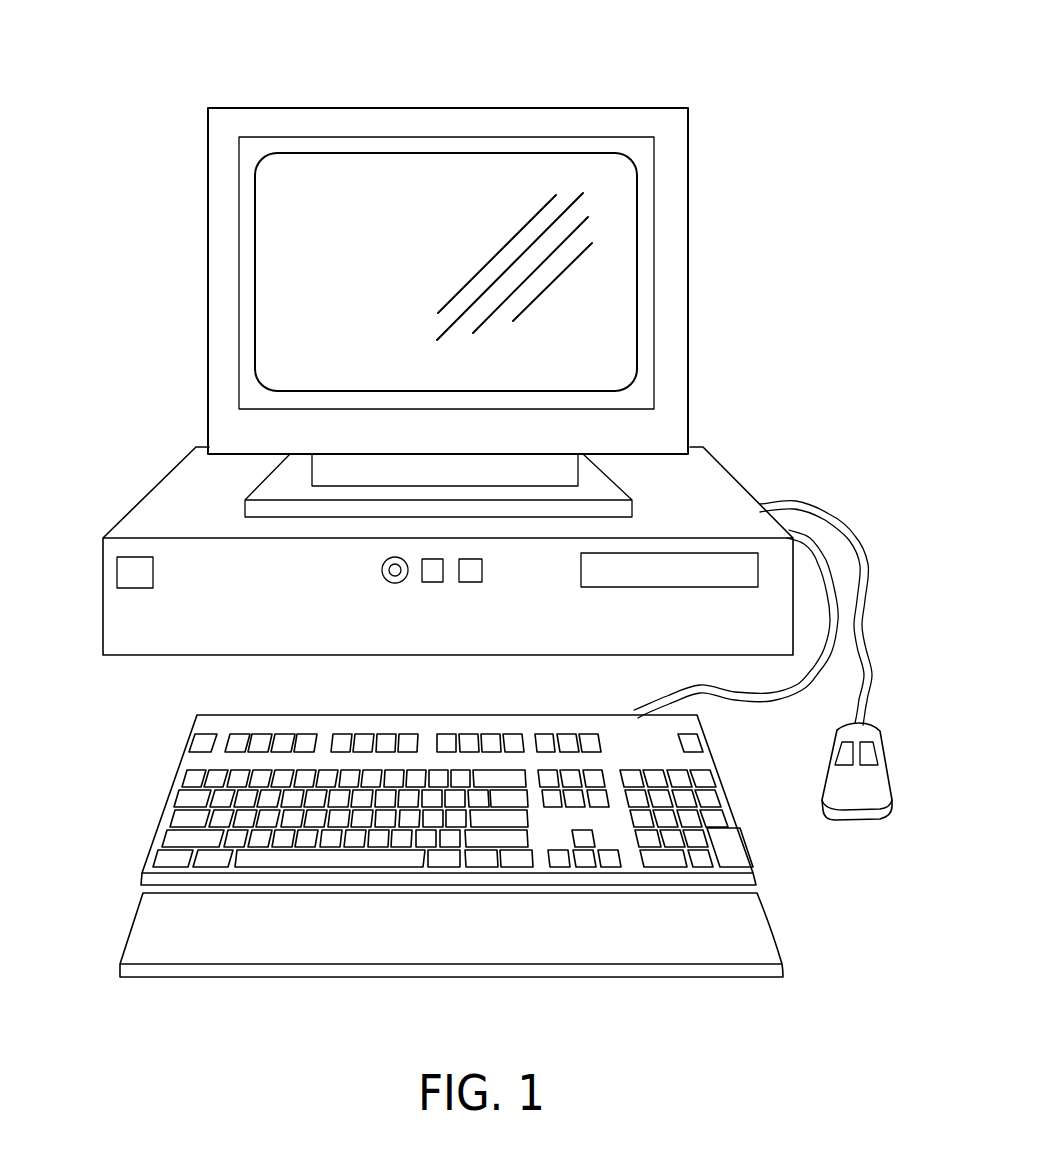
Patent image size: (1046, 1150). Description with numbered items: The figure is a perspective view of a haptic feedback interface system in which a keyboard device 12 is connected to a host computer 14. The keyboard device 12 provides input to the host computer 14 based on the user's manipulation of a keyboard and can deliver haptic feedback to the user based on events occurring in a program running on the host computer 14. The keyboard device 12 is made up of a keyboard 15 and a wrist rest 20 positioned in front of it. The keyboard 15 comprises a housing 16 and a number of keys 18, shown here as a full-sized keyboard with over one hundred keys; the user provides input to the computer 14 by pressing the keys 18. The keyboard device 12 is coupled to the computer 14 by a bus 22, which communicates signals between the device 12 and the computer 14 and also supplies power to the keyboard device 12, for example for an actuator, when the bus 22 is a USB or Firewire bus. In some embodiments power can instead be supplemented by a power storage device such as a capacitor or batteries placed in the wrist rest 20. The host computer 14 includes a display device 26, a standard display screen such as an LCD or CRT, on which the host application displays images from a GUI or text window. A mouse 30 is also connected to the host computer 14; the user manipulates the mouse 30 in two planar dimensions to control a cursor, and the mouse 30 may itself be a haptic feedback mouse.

The keyboard device 12 is at (415, 821).
The host computer 14 is at (448, 335).
The keyboard 15 is at (429, 775).
The housing 16 is at (178, 790).
The keys 18 is at (322, 817).
The wrist rest 20 is at (738, 945).
The bus 22 is at (742, 703).
The display device 26 is at (320, 219).
The mouse 30 is at (836, 514).